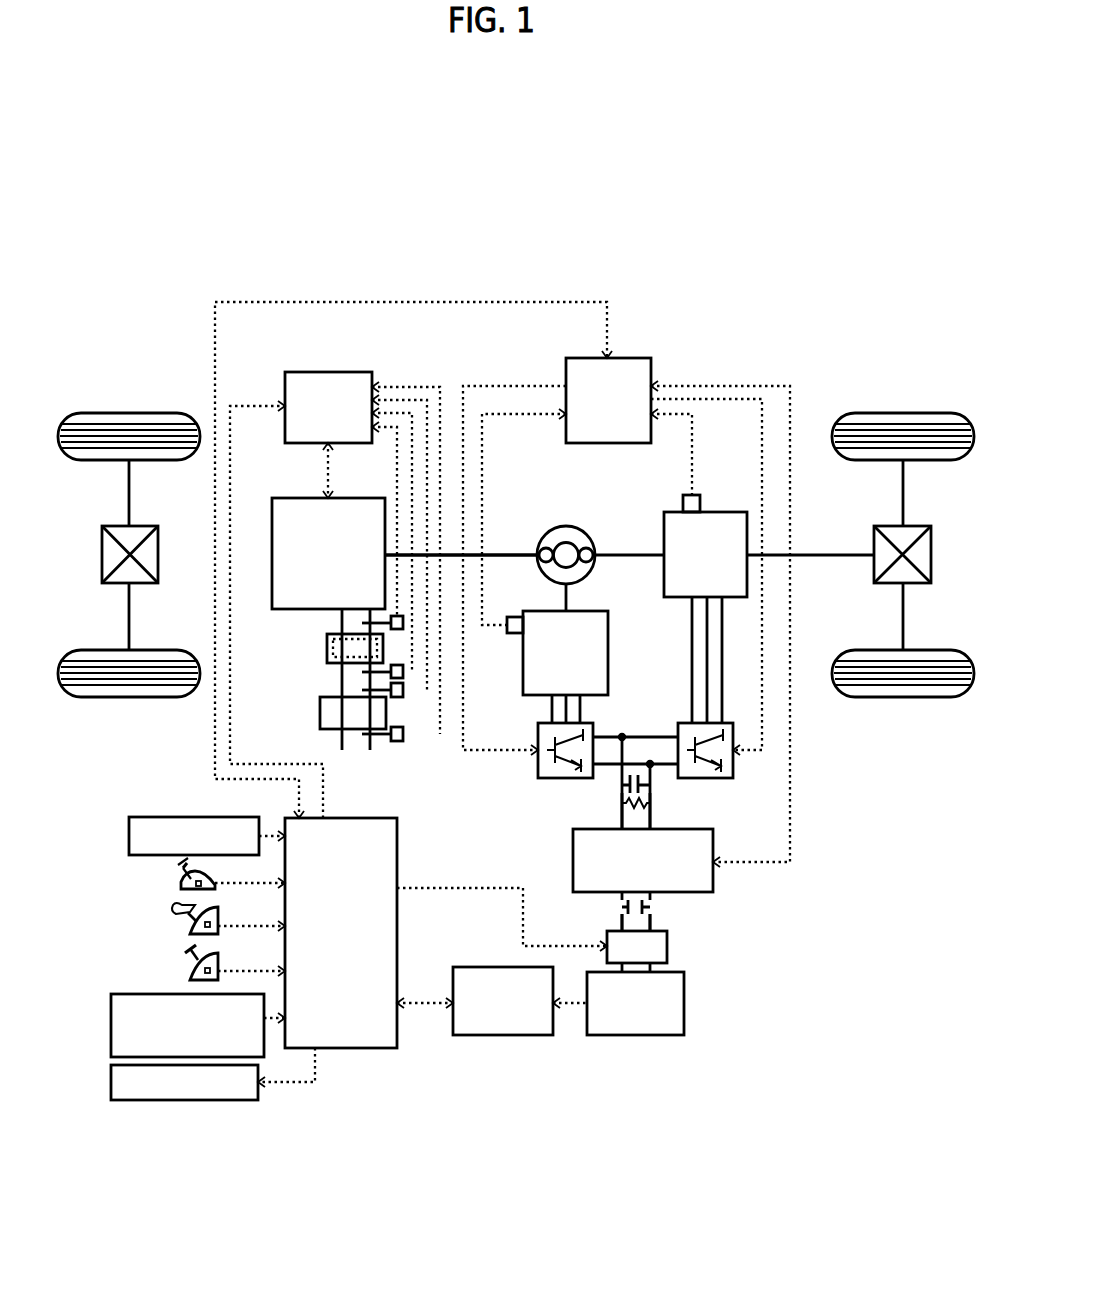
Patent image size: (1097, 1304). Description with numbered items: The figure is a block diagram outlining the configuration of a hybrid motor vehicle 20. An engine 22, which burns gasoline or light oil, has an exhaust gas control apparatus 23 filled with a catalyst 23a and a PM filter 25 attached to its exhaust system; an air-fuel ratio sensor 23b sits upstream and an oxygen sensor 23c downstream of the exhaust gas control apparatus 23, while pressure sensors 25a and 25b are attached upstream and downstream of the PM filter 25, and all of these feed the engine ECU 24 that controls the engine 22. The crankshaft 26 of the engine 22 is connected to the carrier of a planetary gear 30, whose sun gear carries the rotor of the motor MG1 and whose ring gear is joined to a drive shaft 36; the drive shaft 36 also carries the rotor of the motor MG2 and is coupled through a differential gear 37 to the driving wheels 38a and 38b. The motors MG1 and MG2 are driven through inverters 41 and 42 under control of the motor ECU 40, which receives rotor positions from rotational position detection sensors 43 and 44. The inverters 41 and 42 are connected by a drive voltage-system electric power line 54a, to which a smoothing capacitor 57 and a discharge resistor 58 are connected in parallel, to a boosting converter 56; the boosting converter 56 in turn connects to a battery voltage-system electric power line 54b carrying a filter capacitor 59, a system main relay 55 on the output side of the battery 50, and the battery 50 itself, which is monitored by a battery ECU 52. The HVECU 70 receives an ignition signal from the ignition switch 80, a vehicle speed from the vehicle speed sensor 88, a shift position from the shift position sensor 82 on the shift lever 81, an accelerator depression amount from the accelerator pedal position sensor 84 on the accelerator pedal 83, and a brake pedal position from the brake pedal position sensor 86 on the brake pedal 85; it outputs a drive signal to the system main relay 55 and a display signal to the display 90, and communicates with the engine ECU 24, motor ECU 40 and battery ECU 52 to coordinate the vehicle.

The hybrid motor vehicle 20 is at (720, 303).
The engine 22 is at (352, 497).
The exhaust gas control apparatus 23 is at (327, 641).
The catalyst 23a is at (333, 656).
The air-fuel ratio sensor 23b is at (404, 623).
The oxygen sensor 23c is at (404, 672).
The engine ECU 24 is at (332, 371).
The PM filter 25 is at (320, 727).
The pressure sensor 25a is at (404, 690).
The pressure sensor 25b is at (399, 742).
The crankshaft 26 is at (517, 553).
The planetary gear 30 is at (567, 525).
The drive shaft 36 is at (824, 552).
The differential gear 37 is at (915, 524).
The driving wheel 38a is at (902, 412).
The driving wheel 38b is at (903, 698).
The motor ECU 40 is at (632, 357).
The inverter 41 is at (594, 721).
The inverter 42 is at (728, 722).
The rotational position detection sensor 43 is at (513, 616).
The rotational position detection sensor 44 is at (683, 494).
The battery 50 is at (685, 998).
The battery ECU 52 is at (503, 1037).
The drive voltage-system electric power line 54a is at (620, 812).
The battery voltage-system electric power line 54b is at (632, 926).
The system main relay 55 is at (668, 950).
The boosting converter 56 is at (715, 853).
The smoothing capacitor 57 is at (605, 787).
The discharge resistor 58 is at (646, 800).
The filter capacitor 59 is at (623, 909).
The HVECU 70 is at (364, 1050).
The ignition switch 80 is at (128, 831).
The shift lever 81 is at (176, 872).
The shift position sensor 82 is at (181, 883).
The accelerator pedal 83 is at (172, 908).
The accelerator pedal position sensor 84 is at (186, 925).
The brake pedal 85 is at (186, 961).
The brake pedal position sensor 86 is at (186, 977).
The vehicle speed sensor 88 is at (110, 1016).
The display 90 is at (110, 1078).
The motor MG1 is at (596, 609).
The motor MG2 is at (663, 531).